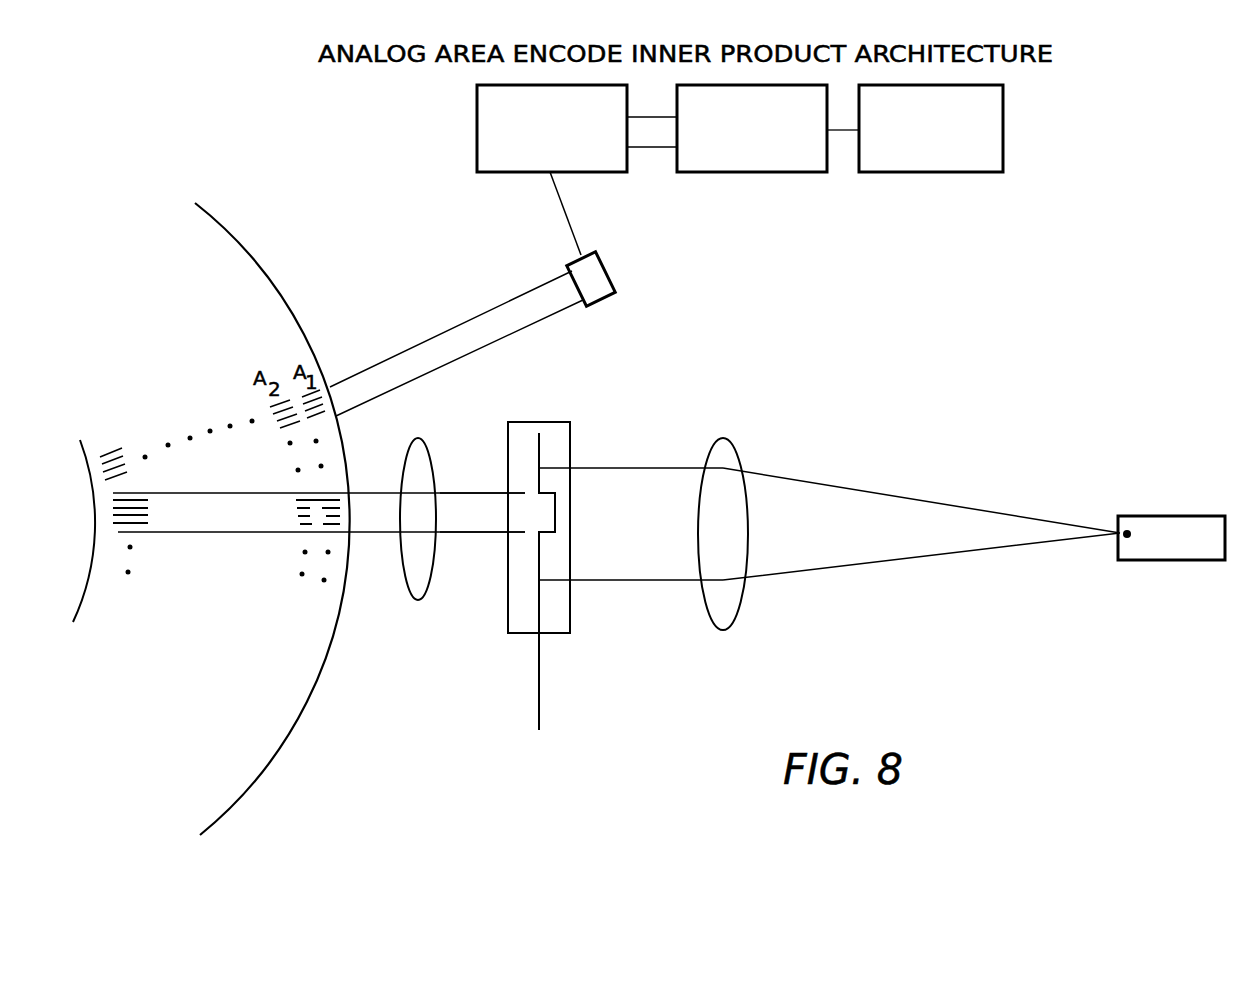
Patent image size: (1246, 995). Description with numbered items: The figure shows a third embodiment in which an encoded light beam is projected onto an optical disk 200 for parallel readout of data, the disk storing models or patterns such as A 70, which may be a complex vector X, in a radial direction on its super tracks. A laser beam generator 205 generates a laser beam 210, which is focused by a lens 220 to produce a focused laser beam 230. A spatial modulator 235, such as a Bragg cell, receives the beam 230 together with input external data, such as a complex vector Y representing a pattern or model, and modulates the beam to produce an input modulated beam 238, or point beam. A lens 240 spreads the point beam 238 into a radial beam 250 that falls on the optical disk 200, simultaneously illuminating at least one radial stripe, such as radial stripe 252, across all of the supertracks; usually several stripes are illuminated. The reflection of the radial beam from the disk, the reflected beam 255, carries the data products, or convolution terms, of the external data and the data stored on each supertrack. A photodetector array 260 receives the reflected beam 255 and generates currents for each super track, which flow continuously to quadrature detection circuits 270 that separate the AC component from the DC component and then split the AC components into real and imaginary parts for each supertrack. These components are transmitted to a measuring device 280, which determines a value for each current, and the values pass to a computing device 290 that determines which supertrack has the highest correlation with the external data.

The model or pattern A70 70 is at (90, 511).
The optical disk 200 is at (313, 688).
The laser beam generator 205 is at (1165, 515).
The laser beam 210 is at (912, 460).
The lens 220 is at (757, 413).
The focused laser beam 230 is at (655, 467).
The spatial modulator 235 is at (557, 390).
The input modulated beam 238 is at (473, 540).
The lens 240 is at (452, 414).
The radial beam 250 is at (375, 540).
The radial stripe 252 is at (135, 505).
The reflected beam 255 is at (511, 299).
The photodetector array 260 is at (612, 277).
The quadrature detection circuits 270 is at (517, 174).
The measuring device 280 is at (757, 174).
The computing device 290 is at (903, 174).